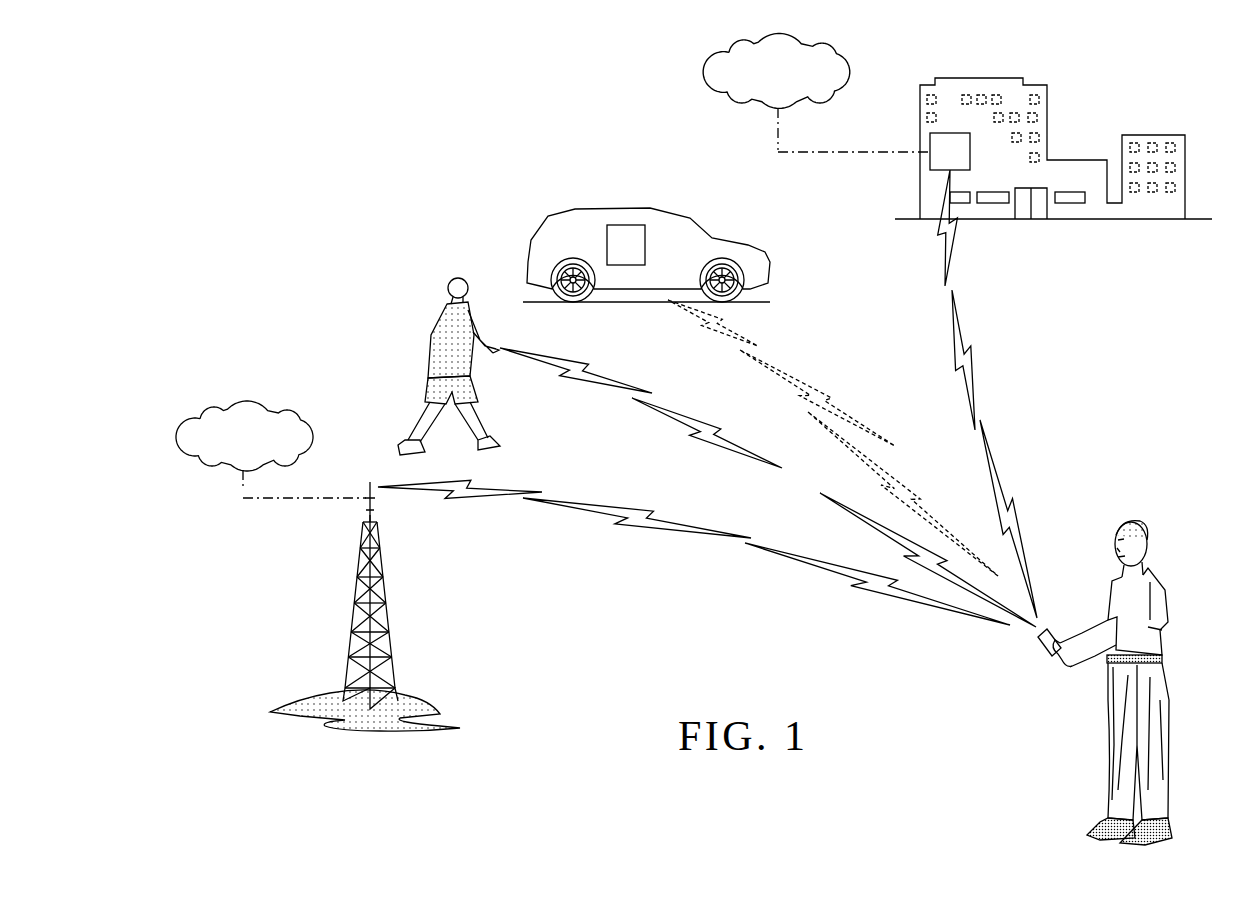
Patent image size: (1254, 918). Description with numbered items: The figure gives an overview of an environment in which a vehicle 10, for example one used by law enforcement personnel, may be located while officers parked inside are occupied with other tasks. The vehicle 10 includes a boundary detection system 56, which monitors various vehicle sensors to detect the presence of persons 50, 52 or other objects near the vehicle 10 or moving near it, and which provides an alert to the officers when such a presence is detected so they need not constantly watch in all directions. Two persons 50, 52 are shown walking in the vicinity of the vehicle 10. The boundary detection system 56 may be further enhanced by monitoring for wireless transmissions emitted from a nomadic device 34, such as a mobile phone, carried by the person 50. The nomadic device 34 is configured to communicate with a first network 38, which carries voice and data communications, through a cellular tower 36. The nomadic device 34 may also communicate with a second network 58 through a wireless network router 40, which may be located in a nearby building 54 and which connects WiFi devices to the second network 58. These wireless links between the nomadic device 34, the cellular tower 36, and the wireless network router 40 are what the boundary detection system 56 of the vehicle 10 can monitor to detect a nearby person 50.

The vehicle 10 is at (604, 208).
The nomadic device 34 is at (1052, 632).
The cellular tower 36 is at (350, 614).
The first network 38 is at (313, 438).
The wireless network router 40 is at (930, 142).
The person 50 is at (1168, 608).
The person 52 is at (431, 340).
The building 54 is at (1187, 176).
The boundary detection system 56 is at (625, 225).
The second network 58 is at (704, 76).